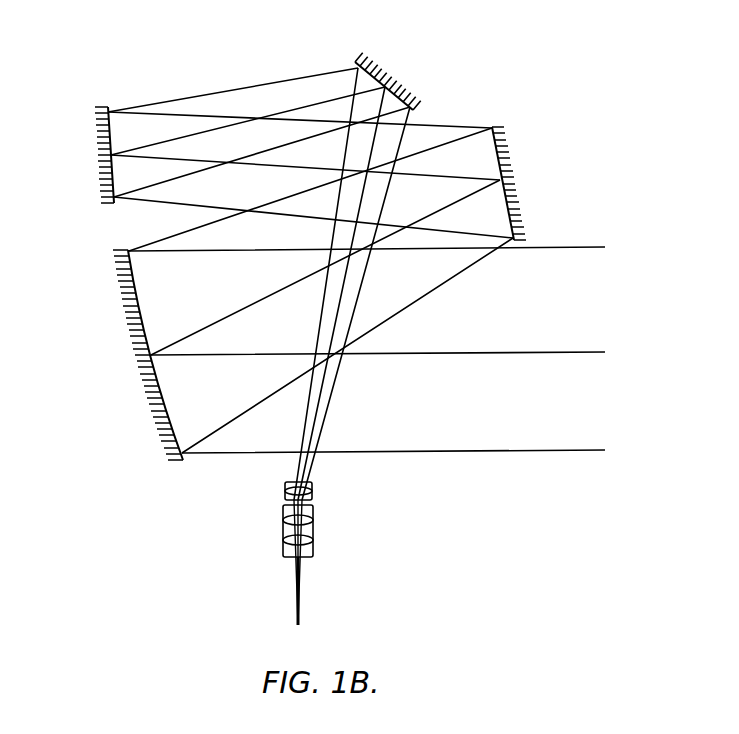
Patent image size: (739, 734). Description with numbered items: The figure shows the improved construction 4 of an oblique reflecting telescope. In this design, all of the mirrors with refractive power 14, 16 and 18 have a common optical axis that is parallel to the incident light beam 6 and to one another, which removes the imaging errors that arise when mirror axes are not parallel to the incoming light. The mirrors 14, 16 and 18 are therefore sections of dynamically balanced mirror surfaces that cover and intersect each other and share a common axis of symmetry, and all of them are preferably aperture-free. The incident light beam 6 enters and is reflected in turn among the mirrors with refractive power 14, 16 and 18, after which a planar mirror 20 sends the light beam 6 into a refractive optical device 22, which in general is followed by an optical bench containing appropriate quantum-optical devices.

The improved construction 4 is at (525, 608).
The incident light beam 6 is at (553, 247).
The mirror with refractive power 14 is at (128, 340).
The mirror with refractive power 16 is at (517, 173).
The mirror with refractive power 18 is at (97, 158).
The planar mirror 20 is at (393, 83).
The refractive optical device 22 is at (349, 474).